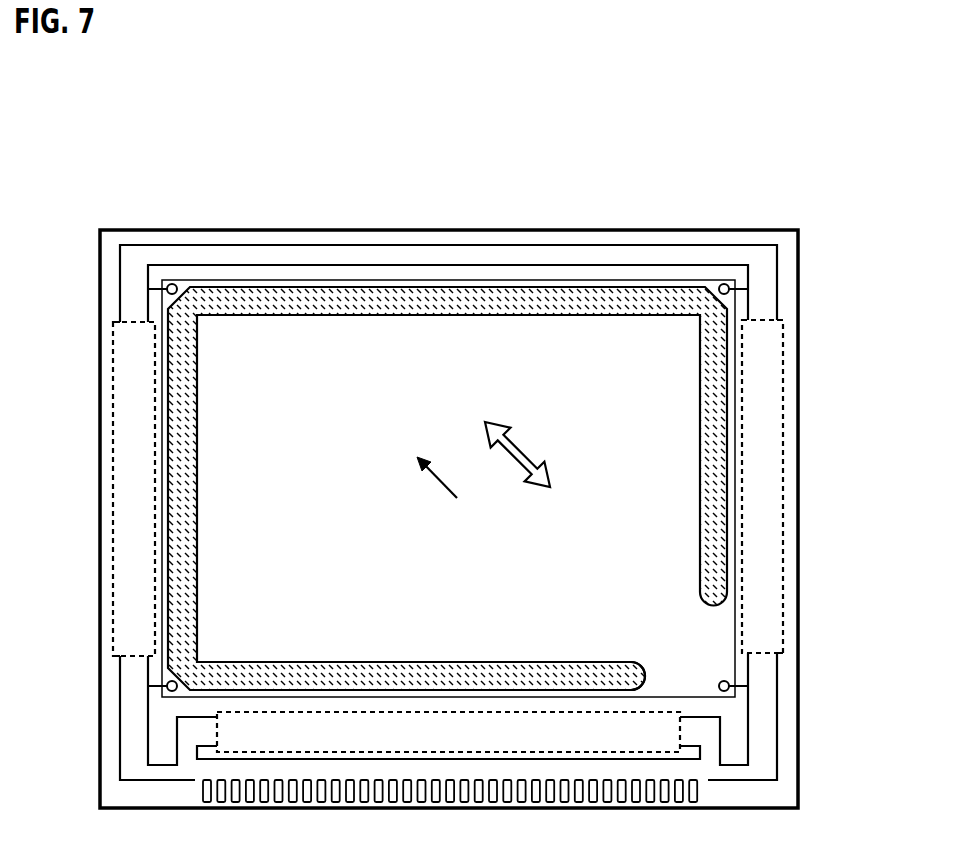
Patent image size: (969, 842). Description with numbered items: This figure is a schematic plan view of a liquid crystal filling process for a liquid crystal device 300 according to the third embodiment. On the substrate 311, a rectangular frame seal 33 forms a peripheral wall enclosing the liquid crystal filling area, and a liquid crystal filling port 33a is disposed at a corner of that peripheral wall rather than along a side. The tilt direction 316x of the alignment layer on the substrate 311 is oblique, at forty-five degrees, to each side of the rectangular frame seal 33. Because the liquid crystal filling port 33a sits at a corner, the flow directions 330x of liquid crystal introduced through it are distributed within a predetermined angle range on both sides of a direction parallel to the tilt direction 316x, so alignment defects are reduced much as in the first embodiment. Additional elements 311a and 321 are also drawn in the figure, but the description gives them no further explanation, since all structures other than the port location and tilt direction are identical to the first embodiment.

The liquid crystal device 300 is at (475, 162).
The substrate 311 is at (167, 230).
The substrate edge / peripheral region 311a is at (712, 245).
The rectangular frame seal 33 is at (268, 287).
The liquid crystal filling port 33a is at (645, 668).
The frame-shaped light shielding film 321 is at (507, 280).
The tilt direction 316x is at (527, 450).
The flow directions 330x is at (437, 480).